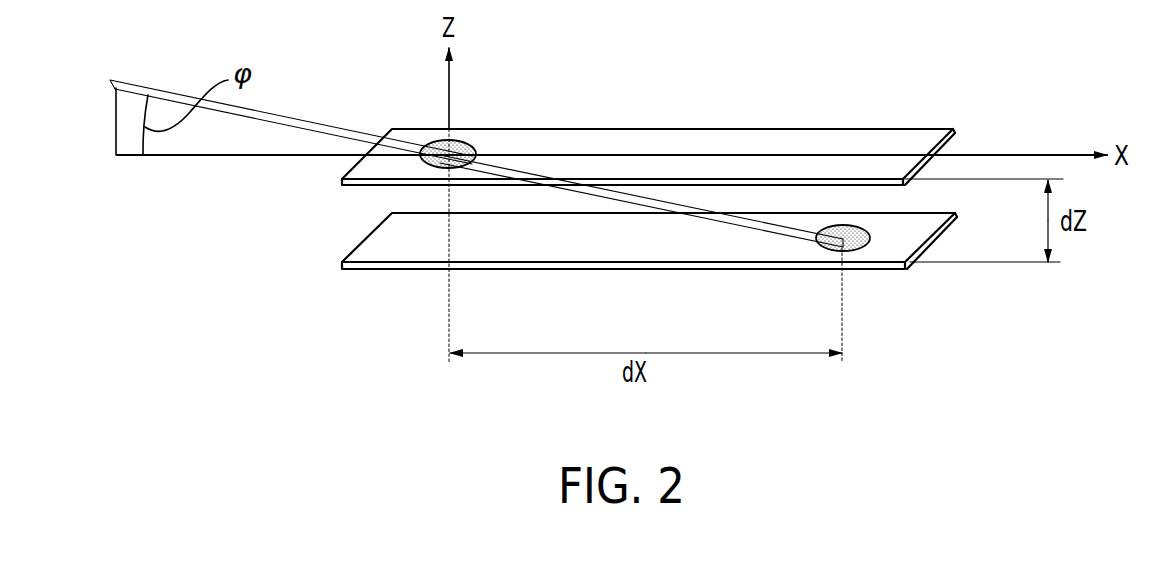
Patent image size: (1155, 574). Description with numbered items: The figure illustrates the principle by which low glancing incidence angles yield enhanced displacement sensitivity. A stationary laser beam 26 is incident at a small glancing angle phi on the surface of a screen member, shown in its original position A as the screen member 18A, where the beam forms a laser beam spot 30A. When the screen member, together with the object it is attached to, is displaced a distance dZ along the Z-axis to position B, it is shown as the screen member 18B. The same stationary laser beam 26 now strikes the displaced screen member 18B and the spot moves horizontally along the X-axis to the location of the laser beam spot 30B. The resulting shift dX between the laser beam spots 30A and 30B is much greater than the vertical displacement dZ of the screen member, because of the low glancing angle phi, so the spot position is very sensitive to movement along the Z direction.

The laser beam 26 is at (297, 117).
The screen member at position A 18A is at (863, 138).
The screen member at position B 18B is at (880, 270).
The laser beam spot at position A 30A is at (468, 142).
The laser beam spot at position B 30B is at (875, 235).